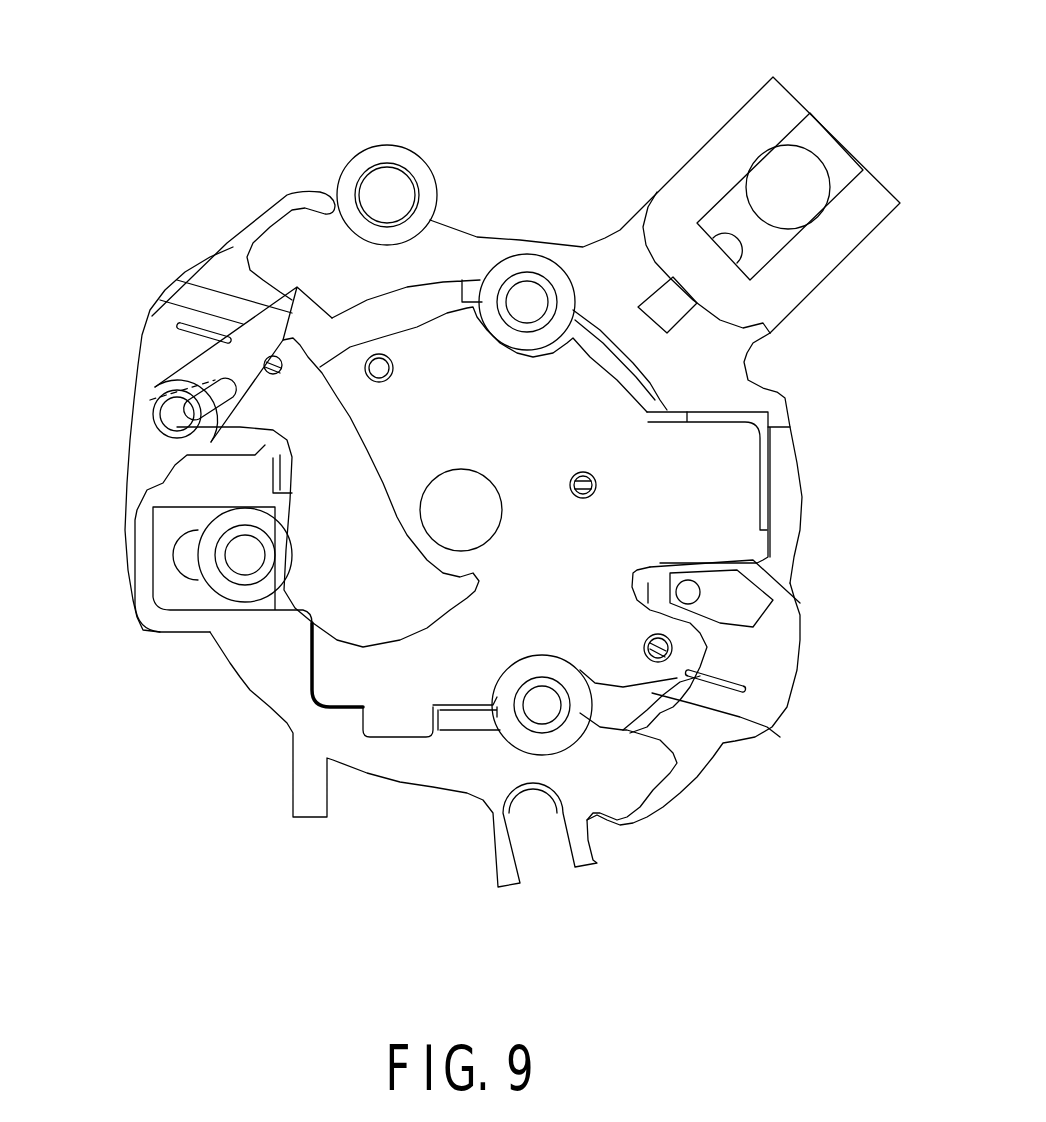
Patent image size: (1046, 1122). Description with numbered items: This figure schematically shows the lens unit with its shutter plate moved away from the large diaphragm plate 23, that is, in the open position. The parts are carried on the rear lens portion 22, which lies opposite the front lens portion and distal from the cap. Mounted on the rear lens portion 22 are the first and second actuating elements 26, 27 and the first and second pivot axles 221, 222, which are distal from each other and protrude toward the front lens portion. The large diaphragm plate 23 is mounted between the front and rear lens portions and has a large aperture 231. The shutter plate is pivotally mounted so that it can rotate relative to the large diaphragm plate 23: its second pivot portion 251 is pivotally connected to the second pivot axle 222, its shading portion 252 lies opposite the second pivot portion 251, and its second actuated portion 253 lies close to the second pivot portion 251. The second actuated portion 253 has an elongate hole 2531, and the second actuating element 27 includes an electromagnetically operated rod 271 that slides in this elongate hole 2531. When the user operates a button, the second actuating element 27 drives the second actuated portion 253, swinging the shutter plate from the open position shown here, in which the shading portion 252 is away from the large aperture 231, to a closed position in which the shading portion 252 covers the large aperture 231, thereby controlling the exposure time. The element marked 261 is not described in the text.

The rear lens portion 22 is at (470, 247).
The first pivot axle 221 is at (670, 663).
The second pivot axle 222 is at (240, 410).
The large diaphragm plate 23 is at (682, 477).
The large aperture 231 is at (461, 552).
The second pivot portion 251 is at (278, 356).
The shading portion 252 is at (382, 593).
The second actuated portion 253 is at (228, 365).
The elongate hole 2531 is at (165, 456).
The first actuating element 26 is at (767, 660).
The pivot pin 261 is at (690, 590).
The second actuating element 27 is at (152, 316).
The electromagnetically operated rod 271 is at (173, 412).